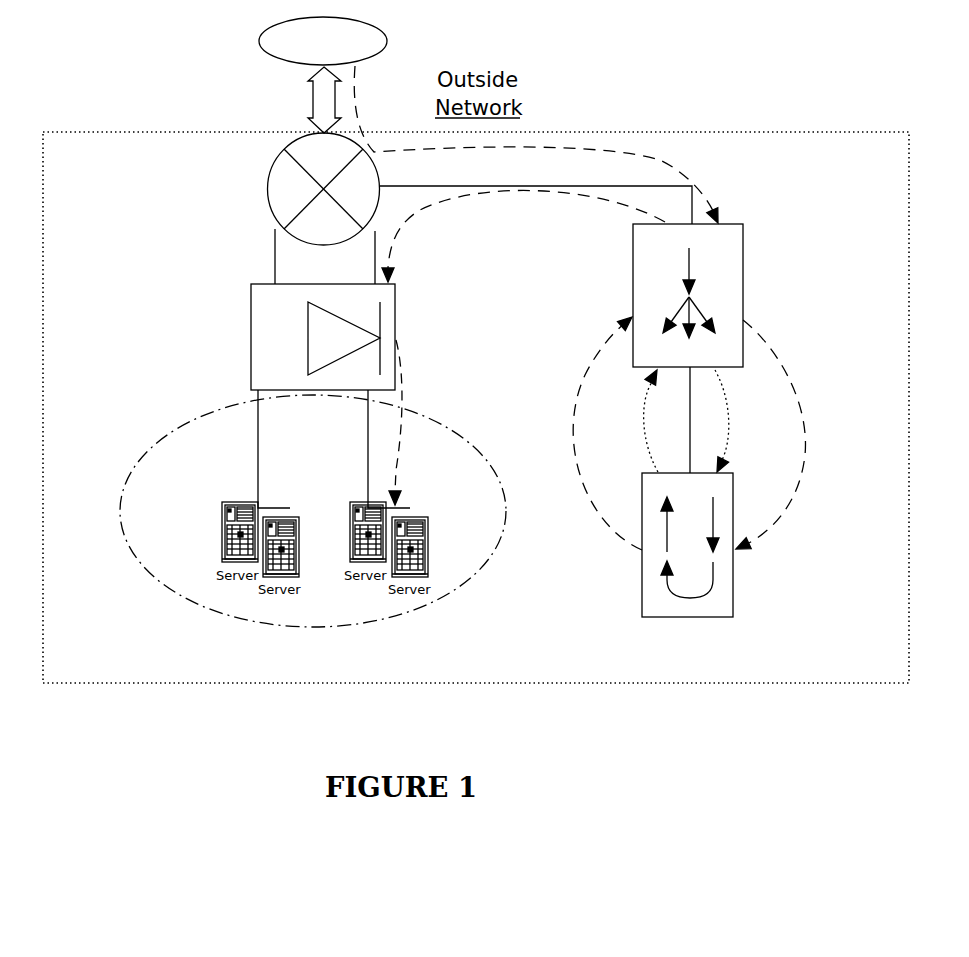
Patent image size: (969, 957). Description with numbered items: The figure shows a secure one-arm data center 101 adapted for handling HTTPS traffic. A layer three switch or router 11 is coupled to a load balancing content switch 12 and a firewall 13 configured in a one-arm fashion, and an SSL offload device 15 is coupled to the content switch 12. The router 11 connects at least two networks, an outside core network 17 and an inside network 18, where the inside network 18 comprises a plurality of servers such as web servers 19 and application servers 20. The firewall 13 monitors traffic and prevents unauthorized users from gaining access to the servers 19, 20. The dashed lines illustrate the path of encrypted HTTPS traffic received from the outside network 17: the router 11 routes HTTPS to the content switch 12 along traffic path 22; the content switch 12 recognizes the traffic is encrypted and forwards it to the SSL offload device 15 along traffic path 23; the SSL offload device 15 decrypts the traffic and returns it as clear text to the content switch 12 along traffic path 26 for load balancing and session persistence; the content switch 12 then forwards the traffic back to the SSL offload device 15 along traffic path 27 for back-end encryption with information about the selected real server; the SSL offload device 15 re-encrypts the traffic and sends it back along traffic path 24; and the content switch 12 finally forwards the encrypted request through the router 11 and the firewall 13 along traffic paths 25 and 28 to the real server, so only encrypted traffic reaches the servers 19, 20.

The data center 101 is at (117, 124).
The outside core network 17 is at (323, 41).
The layer 3 switch or router 11 is at (267, 190).
The firewall 13 is at (251, 362).
The load balancing content switch 12 is at (744, 247).
The SSL offload device 15 is at (733, 598).
The web servers 19 is at (222, 548).
The application servers 20 is at (430, 527).
The inside network 18 is at (432, 612).
The traffic path 22 is at (658, 157).
The traffic path 23 is at (790, 356).
The traffic path 24 is at (591, 352).
The traffic path 25 is at (418, 212).
The traffic path 26 is at (643, 410).
The traffic path 27 is at (727, 410).
The traffic path 28 is at (398, 346).